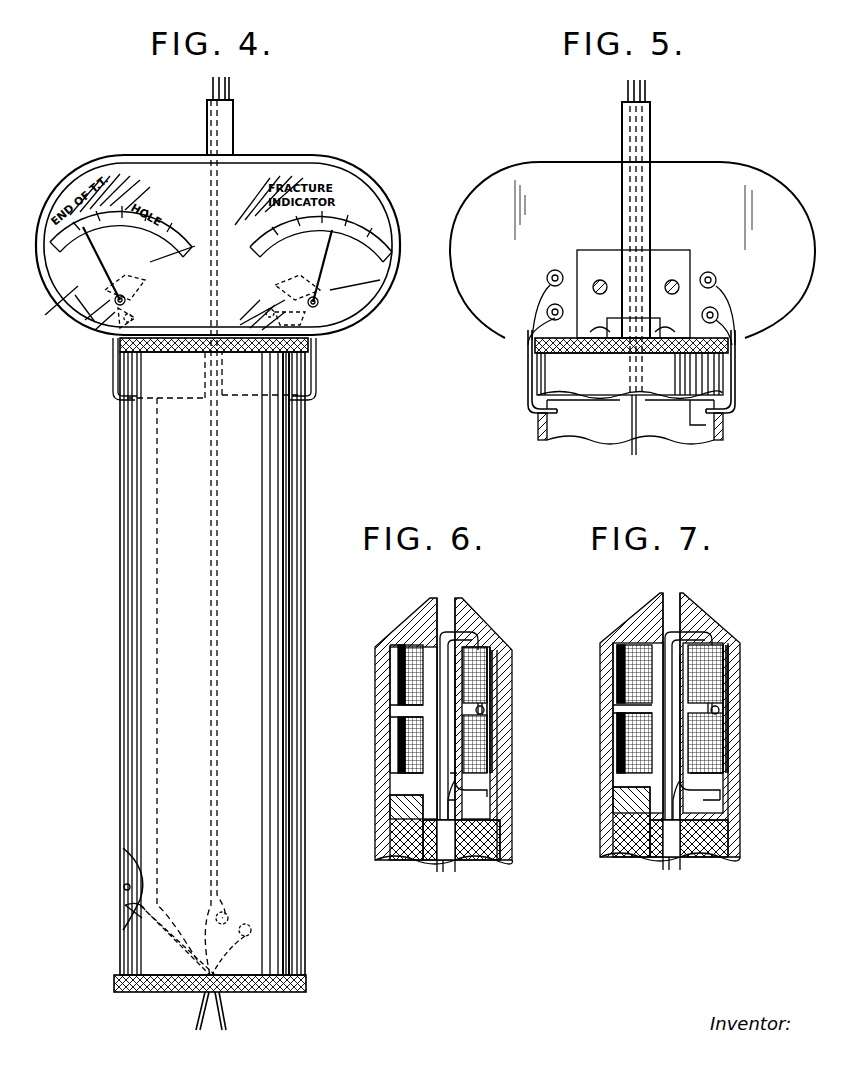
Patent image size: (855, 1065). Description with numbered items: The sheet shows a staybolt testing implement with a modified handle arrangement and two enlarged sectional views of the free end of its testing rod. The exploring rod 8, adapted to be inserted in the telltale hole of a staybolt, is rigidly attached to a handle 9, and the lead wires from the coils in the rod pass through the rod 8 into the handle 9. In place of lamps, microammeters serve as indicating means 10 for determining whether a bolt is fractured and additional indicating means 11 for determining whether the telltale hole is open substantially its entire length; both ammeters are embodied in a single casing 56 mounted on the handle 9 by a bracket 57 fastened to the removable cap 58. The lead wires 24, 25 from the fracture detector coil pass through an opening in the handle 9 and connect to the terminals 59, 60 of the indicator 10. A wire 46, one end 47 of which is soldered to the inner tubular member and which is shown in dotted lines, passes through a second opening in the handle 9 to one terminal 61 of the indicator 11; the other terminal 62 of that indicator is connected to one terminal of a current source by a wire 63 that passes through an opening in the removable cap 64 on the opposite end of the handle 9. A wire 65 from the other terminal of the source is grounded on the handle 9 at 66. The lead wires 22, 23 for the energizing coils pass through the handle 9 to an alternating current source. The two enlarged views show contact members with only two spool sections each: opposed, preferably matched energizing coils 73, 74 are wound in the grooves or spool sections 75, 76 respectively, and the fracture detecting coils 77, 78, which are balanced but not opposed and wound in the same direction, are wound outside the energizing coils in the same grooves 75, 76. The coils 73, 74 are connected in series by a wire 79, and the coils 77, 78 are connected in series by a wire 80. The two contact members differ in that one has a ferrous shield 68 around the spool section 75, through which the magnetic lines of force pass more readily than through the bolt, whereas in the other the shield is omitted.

In FIG. 4, the exploring rod 8 is at (233, 135).
In FIG. 5, the exploring rod 8 is at (650, 135).
In FIG. 4, the handle 9 is at (132, 588).
In FIG. 4, the indicating means 10 is at (362, 310).
In FIG. 4, the additional indicating means 11 is at (50, 299).
In FIG. 4, the lead wire 22 is at (208, 93).
In FIG. 5, the lead wire 22 is at (645, 98).
In FIG. 4, the lead wire 23 is at (213, 80).
In FIG. 5, the lead wire 23 is at (640, 82).
In FIG. 4, the lead wire 24 is at (225, 82).
In FIG. 5, the lead wire 24 is at (628, 85).
In FIG. 4, the lead wire 25 is at (232, 93).
In FIG. 5, the lead wire 25 is at (630, 100).
In FIG. 4, the wire 46 is at (198, 392).
In FIG. 5, the wire 46 is at (680, 418).
In FIG. 4, the soldered end 47 is at (190, 355).
In FIG. 4, the casing 56 is at (356, 337).
In FIG. 5, the casing 56 is at (540, 170).
In FIG. 5, the bracket 57 is at (595, 262).
In FIG. 4, the removable cap 58 is at (305, 345).
In FIG. 5, the removable cap 58 is at (590, 365).
In FIG. 4, the terminal 59 is at (273, 280).
In FIG. 5, the terminal 59 is at (550, 270).
In FIG. 4, the terminal 60 is at (267, 312).
In FIG. 5, the terminal 60 is at (547, 310).
In FIG. 4, the terminal 61 is at (133, 318).
In FIG. 5, the terminal 61 is at (718, 312).
In FIG. 4, the terminal 62 is at (132, 280).
In FIG. 5, the terminal 62 is at (716, 276).
In FIG. 4, the wire 63 is at (155, 762).
In FIG. 5, the wire 63 is at (700, 420).
In FIG. 4, the removable cap 64 is at (157, 990).
In FIG. 4, the wire 65 is at (125, 910).
In FIG. 4, the ground point 66 is at (122, 890).
In FIG. 6, the shield 68 is at (400, 758).
In FIG. 6, the energizing coil 73 is at (490, 758).
In FIG. 7, the energizing coil 73 is at (726, 765).
In FIG. 6, the energizing coil 74 is at (487, 668).
In FIG. 7, the energizing coil 74 is at (705, 668).
In FIG. 6, the spool section 75 is at (458, 763).
In FIG. 7, the spool section 75 is at (688, 748).
In FIG. 6, the spool section 76 is at (458, 690).
In FIG. 7, the spool section 76 is at (685, 693).
In FIG. 6, the fracture detecting coil 77 is at (487, 742).
In FIG. 7, the fracture detecting coil 77 is at (720, 782).
In FIG. 6, the fracture detecting coil 78 is at (485, 650).
In FIG. 7, the fracture detecting coil 78 is at (728, 640).
In FIG. 6, the wire 79 is at (487, 708).
In FIG. 7, the wire 79 is at (718, 706).
In FIG. 6, the wire 80 is at (484, 712).
In FIG. 7, the wire 80 is at (719, 712).